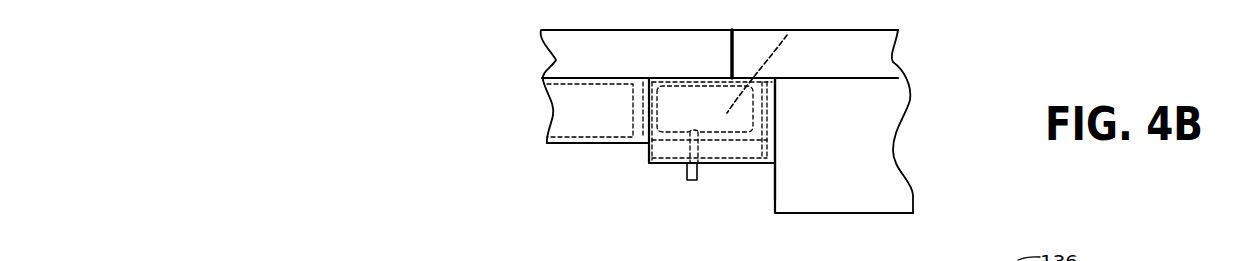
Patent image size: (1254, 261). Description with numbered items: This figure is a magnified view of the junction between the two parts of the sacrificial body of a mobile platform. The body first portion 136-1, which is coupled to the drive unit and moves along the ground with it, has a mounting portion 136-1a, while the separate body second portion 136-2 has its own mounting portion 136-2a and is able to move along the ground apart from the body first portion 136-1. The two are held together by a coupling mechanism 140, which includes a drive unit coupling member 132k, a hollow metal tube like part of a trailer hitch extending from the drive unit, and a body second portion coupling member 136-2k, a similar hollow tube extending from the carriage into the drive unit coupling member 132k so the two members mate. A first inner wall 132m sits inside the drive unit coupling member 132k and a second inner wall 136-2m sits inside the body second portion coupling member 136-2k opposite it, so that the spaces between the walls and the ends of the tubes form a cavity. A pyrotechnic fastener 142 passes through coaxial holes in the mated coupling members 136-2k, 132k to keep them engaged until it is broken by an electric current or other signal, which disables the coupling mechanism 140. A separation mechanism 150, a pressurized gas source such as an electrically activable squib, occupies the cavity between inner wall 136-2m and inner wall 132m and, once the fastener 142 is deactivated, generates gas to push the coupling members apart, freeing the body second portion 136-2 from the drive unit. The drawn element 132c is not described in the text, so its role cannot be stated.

The body second portion 136-2 is at (568, 45).
The body first portion 136-1 is at (874, 46).
The mounting portion 136-1a is at (882, 65).
The mounting portion 136-2a is at (556, 61).
The second inner wall 136-2m is at (632, 123).
The body second portion coupling member 136-2k is at (624, 144).
The coupling mechanism 140 is at (668, 167).
The pyrotechnic fastener 142 is at (692, 181).
The separation mechanism 150 is at (788, 30).
The first inner wall 132m is at (777, 120).
The cross member 132c is at (877, 179).
The drive unit coupling member 132k is at (753, 165).